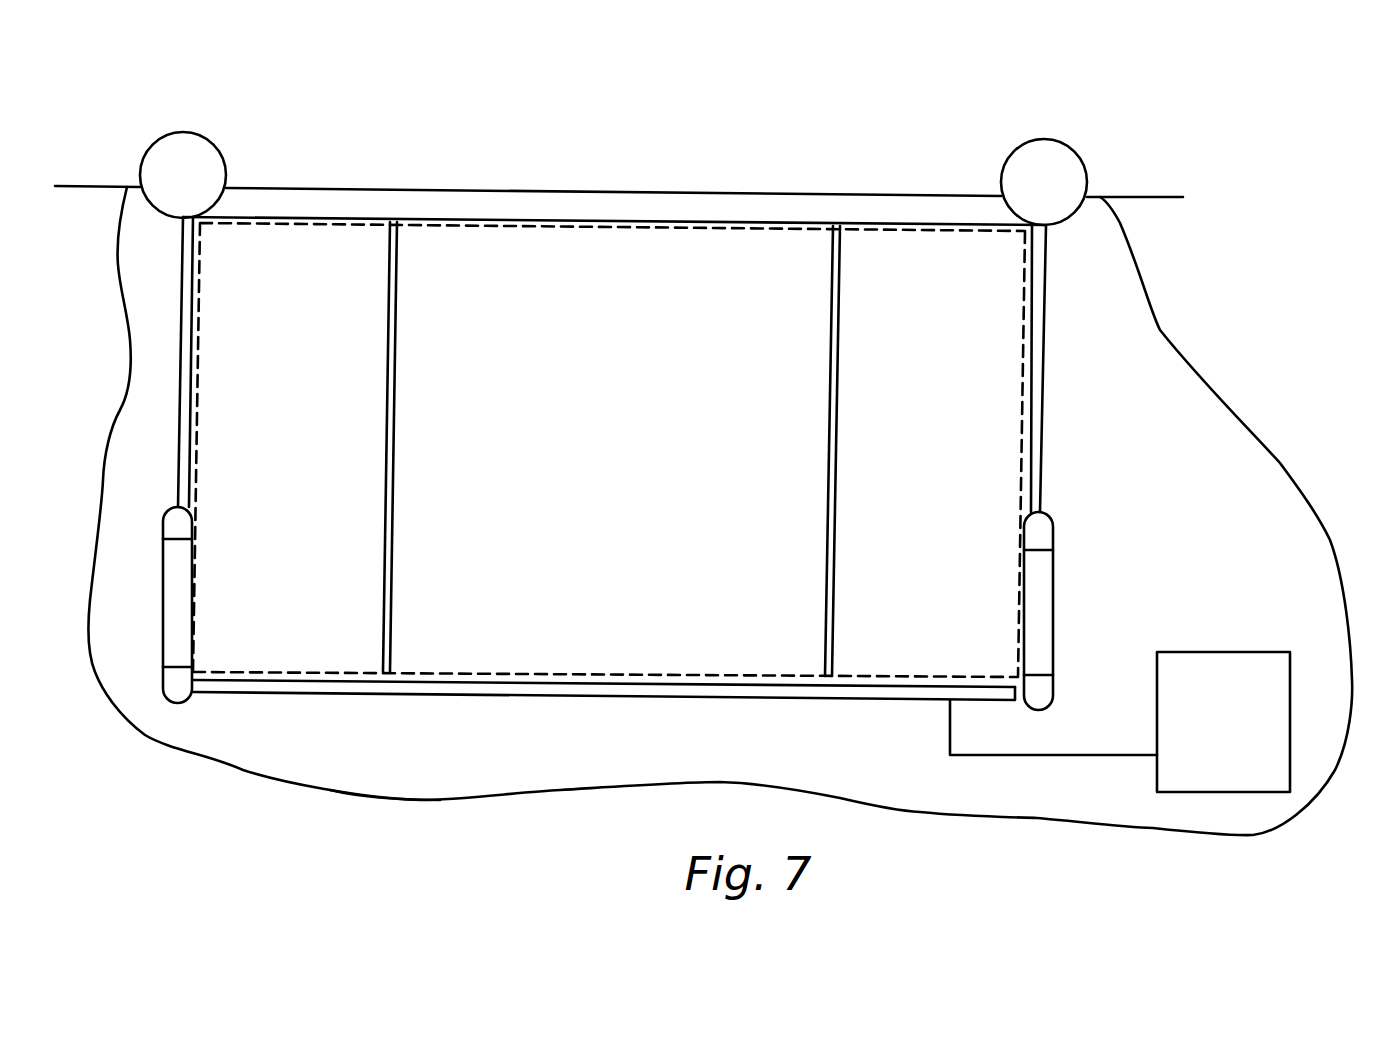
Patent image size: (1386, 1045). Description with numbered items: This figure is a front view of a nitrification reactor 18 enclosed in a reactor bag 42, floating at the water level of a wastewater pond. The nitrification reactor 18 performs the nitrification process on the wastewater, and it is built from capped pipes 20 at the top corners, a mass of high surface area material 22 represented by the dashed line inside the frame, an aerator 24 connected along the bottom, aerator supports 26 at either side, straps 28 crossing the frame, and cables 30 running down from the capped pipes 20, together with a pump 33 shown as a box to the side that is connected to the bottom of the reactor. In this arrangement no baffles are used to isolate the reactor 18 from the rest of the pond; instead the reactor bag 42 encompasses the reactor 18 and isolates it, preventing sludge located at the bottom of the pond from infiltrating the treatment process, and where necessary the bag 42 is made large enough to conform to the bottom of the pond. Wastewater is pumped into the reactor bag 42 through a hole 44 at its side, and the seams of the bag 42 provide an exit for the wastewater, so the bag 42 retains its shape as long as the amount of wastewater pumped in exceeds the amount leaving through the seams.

The nitrification reactor 18 is at (641, 163).
The capped pipes 20 is at (156, 146).
The mass of high surface area material 22 is at (572, 673).
The aerator 24 is at (730, 698).
The aerator supports 26 is at (162, 587).
The straps 28 is at (398, 398).
The cables 30 is at (178, 477).
The pump 33 is at (1120, 722).
The reactor bag 42 is at (455, 797).
The hole 44 is at (102, 686).